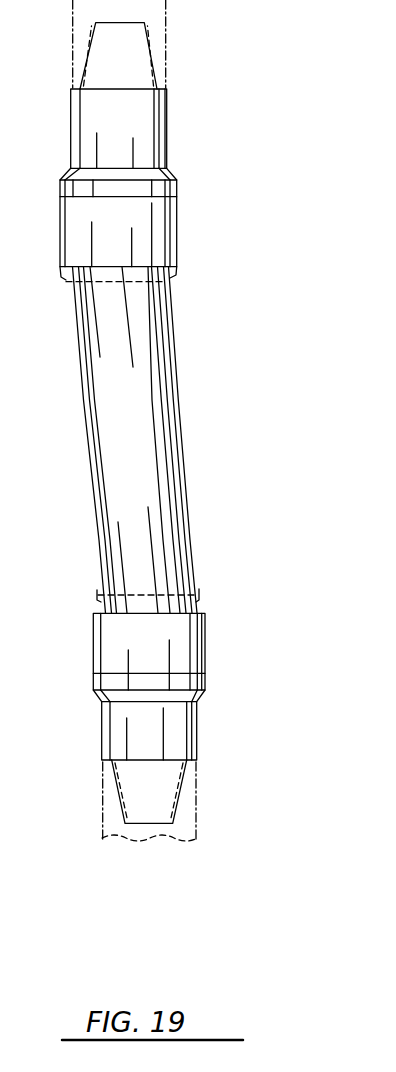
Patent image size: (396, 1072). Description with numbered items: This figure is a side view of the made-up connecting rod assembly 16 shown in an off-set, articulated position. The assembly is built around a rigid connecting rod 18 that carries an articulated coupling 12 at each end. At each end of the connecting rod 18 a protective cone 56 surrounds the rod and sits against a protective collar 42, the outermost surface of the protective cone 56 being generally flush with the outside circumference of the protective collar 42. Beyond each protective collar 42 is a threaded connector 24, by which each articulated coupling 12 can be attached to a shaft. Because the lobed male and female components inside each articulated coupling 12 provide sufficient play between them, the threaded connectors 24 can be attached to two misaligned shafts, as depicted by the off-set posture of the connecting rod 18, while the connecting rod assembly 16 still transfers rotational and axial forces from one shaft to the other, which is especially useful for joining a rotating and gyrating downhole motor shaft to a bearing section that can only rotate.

The articulated coupling 12 is at (193, 163).
The connecting rod assembly 16 is at (141, 464).
The connecting rod 18 is at (187, 522).
The threaded connector 24 is at (126, 77).
The protective collar 42 is at (177, 238).
The protective cone 56 is at (167, 280).